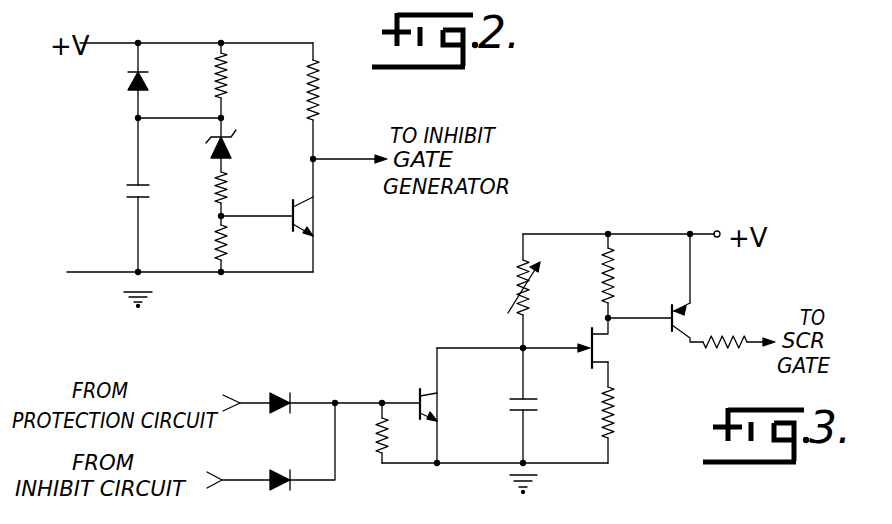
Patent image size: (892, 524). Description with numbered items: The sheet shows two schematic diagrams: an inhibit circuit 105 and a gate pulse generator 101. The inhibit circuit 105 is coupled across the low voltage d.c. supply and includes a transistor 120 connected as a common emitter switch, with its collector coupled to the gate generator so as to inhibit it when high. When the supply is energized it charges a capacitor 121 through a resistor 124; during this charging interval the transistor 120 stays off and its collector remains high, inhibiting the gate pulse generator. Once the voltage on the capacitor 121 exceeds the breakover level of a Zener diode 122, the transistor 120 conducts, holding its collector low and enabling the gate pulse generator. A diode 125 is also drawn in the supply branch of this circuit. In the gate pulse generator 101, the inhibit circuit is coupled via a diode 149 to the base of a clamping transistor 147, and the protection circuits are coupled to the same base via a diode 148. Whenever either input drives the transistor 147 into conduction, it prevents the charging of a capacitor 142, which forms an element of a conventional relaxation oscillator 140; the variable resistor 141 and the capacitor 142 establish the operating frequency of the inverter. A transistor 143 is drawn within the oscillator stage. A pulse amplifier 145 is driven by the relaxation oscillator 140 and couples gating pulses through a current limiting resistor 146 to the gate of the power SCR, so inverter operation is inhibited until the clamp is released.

In FIG. 2, the reference circuit 105 is at (128, 138).
In FIG. 2, the transistor 120 is at (292, 201).
In FIG. 2, the capacitor 121 is at (125, 190).
In FIG. 2, the Zener diode 122 is at (210, 147).
In FIG. 2, the resistor 124 is at (229, 80).
In FIG. 2, the diode 125 is at (130, 80).
In FIG. 3, the gate drive circuit 101 is at (478, 338).
In FIG. 3, the relaxation oscillator 140 is at (614, 346).
In FIG. 3, the variable resistor 141 is at (538, 286).
In FIG. 3, the capacitor 142 is at (538, 401).
In FIG. 3, the transistor 143 is at (590, 345).
In FIG. 3, the pulse amplifier 145 is at (672, 306).
In FIG. 3, the current limiting resistor 146 is at (729, 330).
In FIG. 3, the clamping transistor 147 is at (420, 392).
In FIG. 3, the diode 148 is at (289, 372).
In FIG. 3, the diode 149 is at (276, 472).